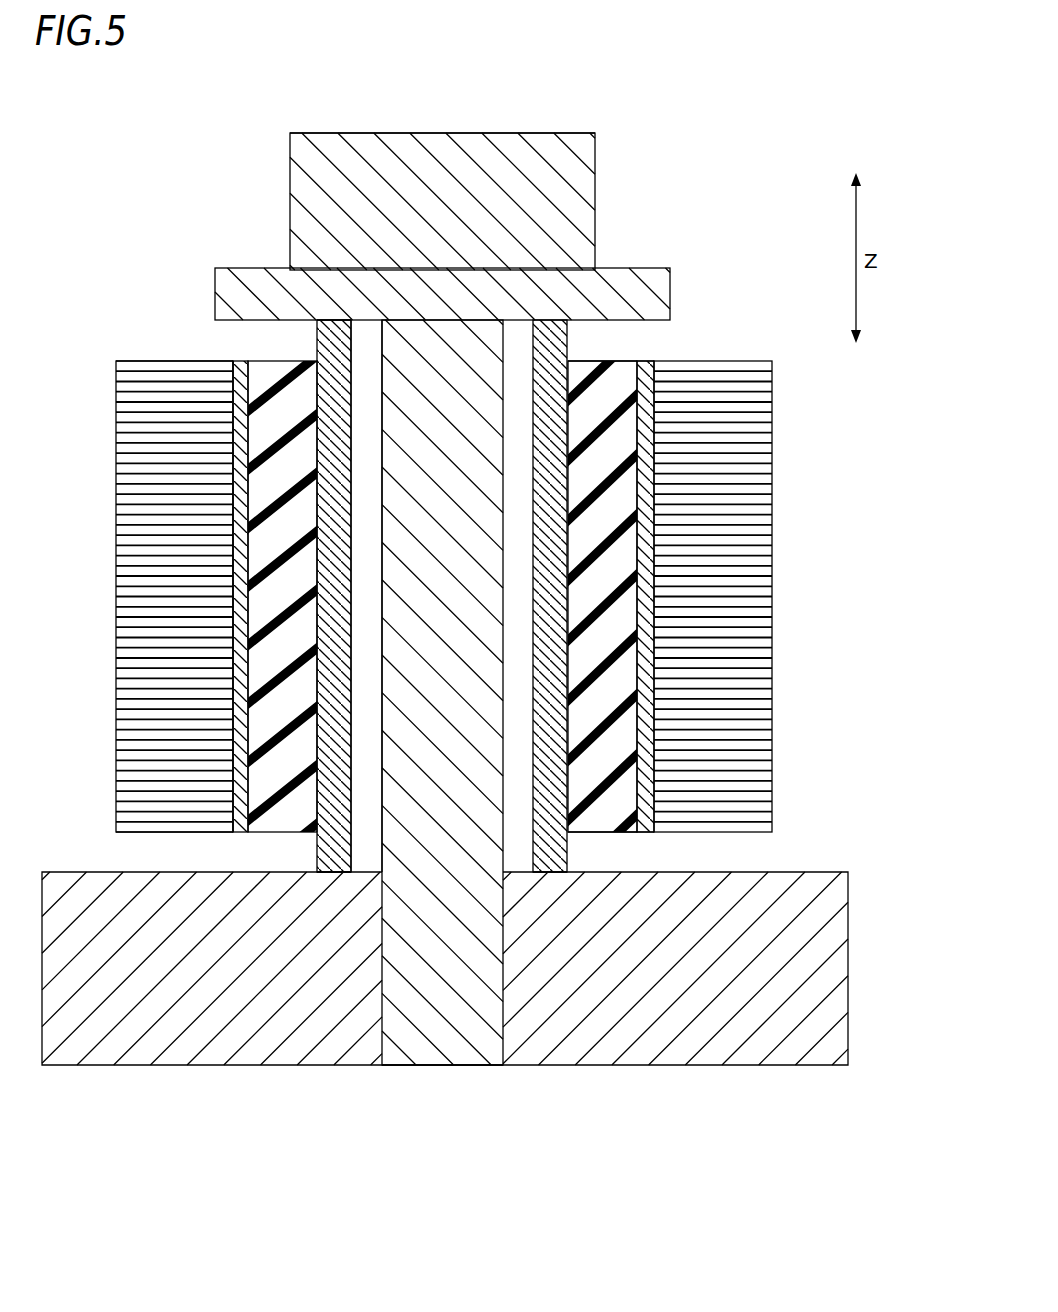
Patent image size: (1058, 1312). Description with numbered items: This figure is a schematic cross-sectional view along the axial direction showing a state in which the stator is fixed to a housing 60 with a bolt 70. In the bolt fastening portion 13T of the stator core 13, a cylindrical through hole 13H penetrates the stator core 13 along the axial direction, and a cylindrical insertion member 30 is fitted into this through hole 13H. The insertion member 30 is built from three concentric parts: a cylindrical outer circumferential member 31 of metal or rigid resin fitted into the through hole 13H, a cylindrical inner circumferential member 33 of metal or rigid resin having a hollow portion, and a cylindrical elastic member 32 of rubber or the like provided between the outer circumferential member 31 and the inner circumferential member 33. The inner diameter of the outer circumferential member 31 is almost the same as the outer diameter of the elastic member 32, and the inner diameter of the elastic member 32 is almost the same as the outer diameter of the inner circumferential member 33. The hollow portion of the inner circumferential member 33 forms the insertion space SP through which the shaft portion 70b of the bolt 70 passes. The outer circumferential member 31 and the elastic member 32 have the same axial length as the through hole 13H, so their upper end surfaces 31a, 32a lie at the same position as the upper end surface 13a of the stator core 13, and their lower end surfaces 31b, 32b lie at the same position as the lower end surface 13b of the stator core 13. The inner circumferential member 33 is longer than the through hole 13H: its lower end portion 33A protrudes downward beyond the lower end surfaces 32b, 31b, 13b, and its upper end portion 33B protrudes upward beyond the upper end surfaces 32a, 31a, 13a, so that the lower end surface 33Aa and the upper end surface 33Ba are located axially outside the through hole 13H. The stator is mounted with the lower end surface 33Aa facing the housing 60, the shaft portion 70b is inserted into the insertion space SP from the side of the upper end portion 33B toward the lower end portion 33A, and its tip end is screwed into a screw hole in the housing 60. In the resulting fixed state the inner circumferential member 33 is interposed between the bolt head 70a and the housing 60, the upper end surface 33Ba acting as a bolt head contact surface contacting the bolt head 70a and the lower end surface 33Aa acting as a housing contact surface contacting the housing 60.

The stator core 13 is at (472, 602).
The bolt fastening portion 13T is at (747, 483).
The upper end surface of the stator core 13a is at (132, 357).
The lower end surface of the stator core 13b is at (140, 837).
The through hole 13H is at (233, 414).
The insertion member 30 is at (203, 345).
The outer circumferential member 31 is at (653, 543).
The upper end surface of the outer circumferential member 31a is at (648, 360).
The lower end surface of the outer circumferential member 31b is at (653, 833).
The elastic member 32 is at (630, 620).
The upper end surface of the elastic member 32a is at (620, 360).
The lower end surface of the elastic member 32b is at (603, 833).
The inner circumferential member 33 is at (303, 334).
The lower end portion of the inner circumferential member 33A is at (324, 873).
The lower end surface of the inner circumferential member 33Aa is at (343, 873).
The upper end portion of the inner circumferential member 33B is at (318, 322).
The upper end surface of the inner circumferential member 33Ba is at (327, 318).
The housing 60 is at (645, 1040).
The bolt 70 is at (607, 147).
The bolt head 70a is at (467, 150).
The shaft portion 70b is at (481, 1025).
The insertion space SP is at (375, 345).